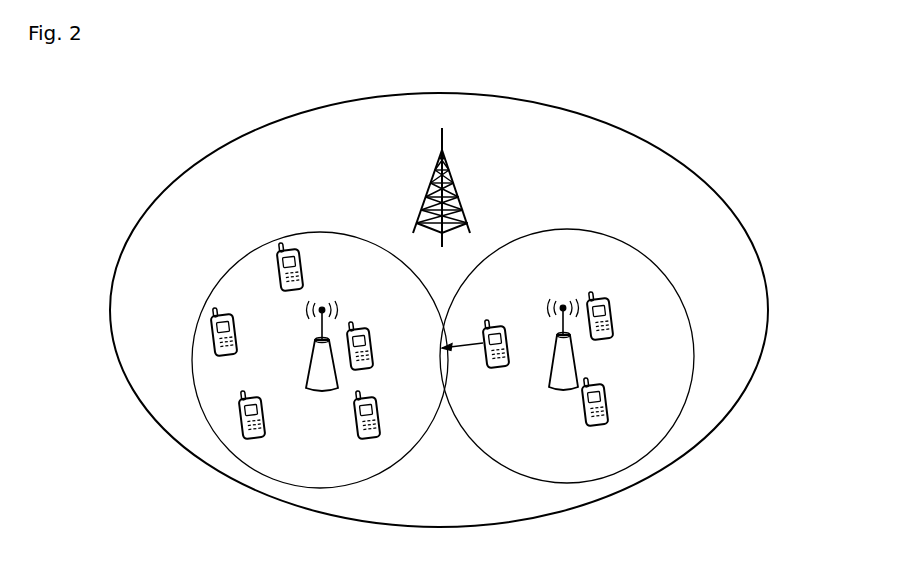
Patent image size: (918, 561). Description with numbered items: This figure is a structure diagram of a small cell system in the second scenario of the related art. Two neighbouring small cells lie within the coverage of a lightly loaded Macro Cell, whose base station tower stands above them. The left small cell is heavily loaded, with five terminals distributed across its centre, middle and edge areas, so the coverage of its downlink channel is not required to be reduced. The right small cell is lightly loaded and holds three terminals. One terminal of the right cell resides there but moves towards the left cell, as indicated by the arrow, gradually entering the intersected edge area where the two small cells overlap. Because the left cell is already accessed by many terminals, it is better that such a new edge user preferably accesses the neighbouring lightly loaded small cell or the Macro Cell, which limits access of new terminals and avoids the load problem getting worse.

The macro cell Macro Cell is at (439, 310).